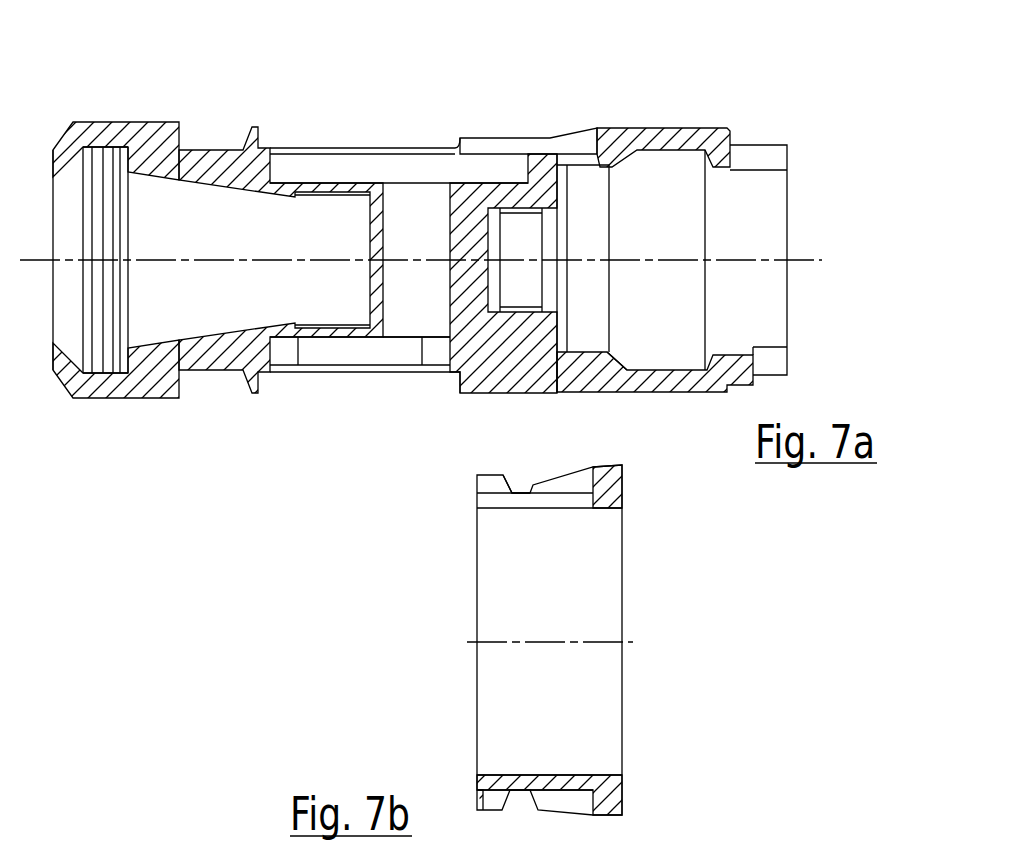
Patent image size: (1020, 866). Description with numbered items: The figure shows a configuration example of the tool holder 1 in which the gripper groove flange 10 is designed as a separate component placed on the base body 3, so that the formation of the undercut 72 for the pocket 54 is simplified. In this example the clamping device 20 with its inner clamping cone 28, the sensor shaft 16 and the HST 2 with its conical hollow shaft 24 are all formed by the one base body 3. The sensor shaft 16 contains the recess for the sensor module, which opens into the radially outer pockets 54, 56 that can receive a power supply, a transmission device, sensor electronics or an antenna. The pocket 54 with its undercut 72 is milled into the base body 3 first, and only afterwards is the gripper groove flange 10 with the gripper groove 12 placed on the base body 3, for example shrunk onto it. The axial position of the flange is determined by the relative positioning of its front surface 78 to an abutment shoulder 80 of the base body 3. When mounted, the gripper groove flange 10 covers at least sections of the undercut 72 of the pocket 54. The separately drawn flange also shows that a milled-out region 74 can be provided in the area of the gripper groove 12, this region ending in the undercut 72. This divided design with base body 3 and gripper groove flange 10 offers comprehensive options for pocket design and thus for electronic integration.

In FIG. 7A, the tool holder 1 is at (812, 85).
In FIG. 7A, the HST 2 is at (672, 211).
In FIG. 7A, the base body 3 is at (541, 125).
In FIG. 7B, the gripper groove flange 10 is at (641, 512).
In FIG. 7B, the gripper groove 12 is at (540, 478).
In FIG. 7A, the sensor shaft 16 is at (387, 132).
In FIG. 7A, the clamping device 20 is at (116, 273).
In FIG. 7A, the conical hollow shaft 24 is at (637, 150).
In FIG. 7A, the clamping cone 28 is at (150, 188).
In FIG. 7A, the pocket 54 is at (302, 153).
In FIG. 7A, the pocket 56 is at (317, 350).
In FIG. 7A, the undercut 72 is at (480, 160).
In FIG. 7B, the milled-out region 74 is at (502, 506).
In FIG. 7B, the front surface 78 is at (625, 790).
In FIG. 7A, the abutment shoulder 80 is at (619, 395).